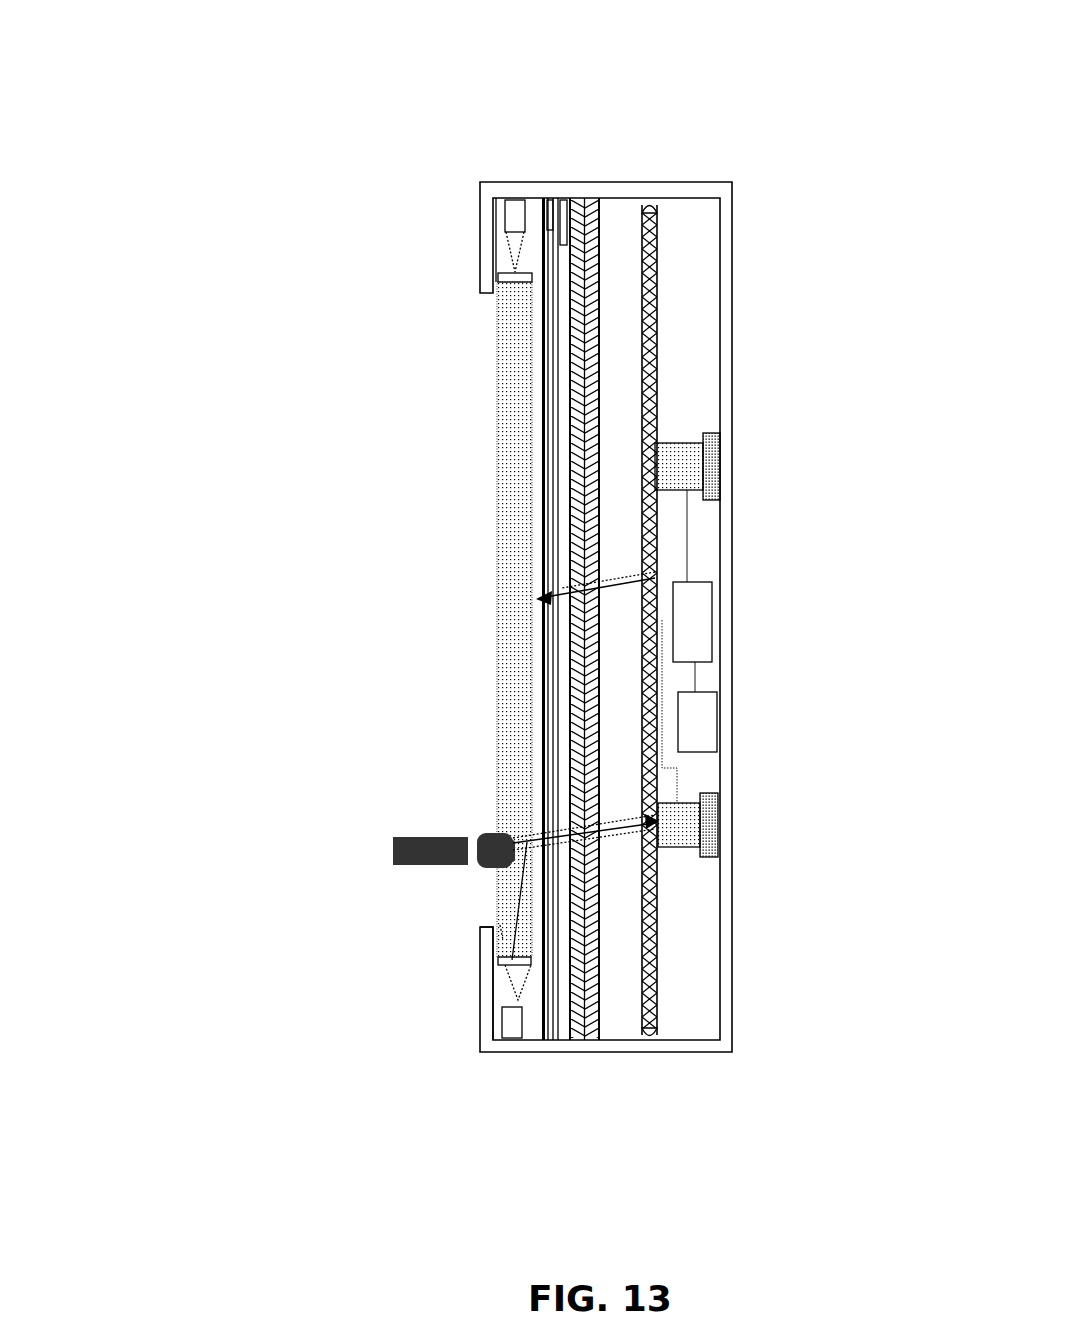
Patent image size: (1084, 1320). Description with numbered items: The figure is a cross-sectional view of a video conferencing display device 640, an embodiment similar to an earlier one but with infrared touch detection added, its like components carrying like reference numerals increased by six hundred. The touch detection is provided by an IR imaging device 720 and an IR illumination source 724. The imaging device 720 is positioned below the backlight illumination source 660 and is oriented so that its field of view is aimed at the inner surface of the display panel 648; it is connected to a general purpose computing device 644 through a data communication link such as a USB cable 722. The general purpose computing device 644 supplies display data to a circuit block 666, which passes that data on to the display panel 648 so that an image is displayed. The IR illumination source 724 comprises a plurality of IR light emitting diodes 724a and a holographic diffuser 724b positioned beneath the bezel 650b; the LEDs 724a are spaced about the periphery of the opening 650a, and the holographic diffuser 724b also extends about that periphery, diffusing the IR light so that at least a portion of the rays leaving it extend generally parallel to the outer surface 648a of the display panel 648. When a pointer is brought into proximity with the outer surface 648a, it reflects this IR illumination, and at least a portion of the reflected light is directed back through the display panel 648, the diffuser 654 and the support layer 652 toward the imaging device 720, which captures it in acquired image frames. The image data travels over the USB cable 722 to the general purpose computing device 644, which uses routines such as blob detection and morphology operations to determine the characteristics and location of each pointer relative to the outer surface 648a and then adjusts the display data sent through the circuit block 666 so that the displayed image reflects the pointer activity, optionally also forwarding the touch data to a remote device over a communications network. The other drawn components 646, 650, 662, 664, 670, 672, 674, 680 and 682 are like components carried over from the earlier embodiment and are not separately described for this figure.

The video conferencing display device 640 is at (256, 104).
The general purpose computing device 644 is at (705, 650).
The connector 646 is at (720, 450).
The display panel 648 is at (484, 580).
The outer surface 648a is at (500, 640).
The housing 650 is at (733, 978).
The opening 650a is at (480, 718).
The bezel 650b is at (480, 1027).
The support layer 652 is at (592, 198).
The diffuser 654 is at (615, 542).
The backlight illumination source 660 is at (628, 225).
The rear space 662 is at (620, 1008).
The wire 664 is at (687, 553).
The circuit block 666 is at (705, 730).
The glass layer 670 is at (548, 210).
The LCD layer 672 is at (557, 210).
The DBEF layer 674 is at (565, 200).
The light source bar 680 is at (680, 655).
The light source end cap 682 is at (650, 1040).
The IR imaging device 720 is at (715, 818).
The USB cable 722 is at (677, 776).
The IR illumination source 724 is at (513, 298).
The IR light emitting diodes 724a is at (508, 243).
The holographic diffuser 724b is at (502, 940).